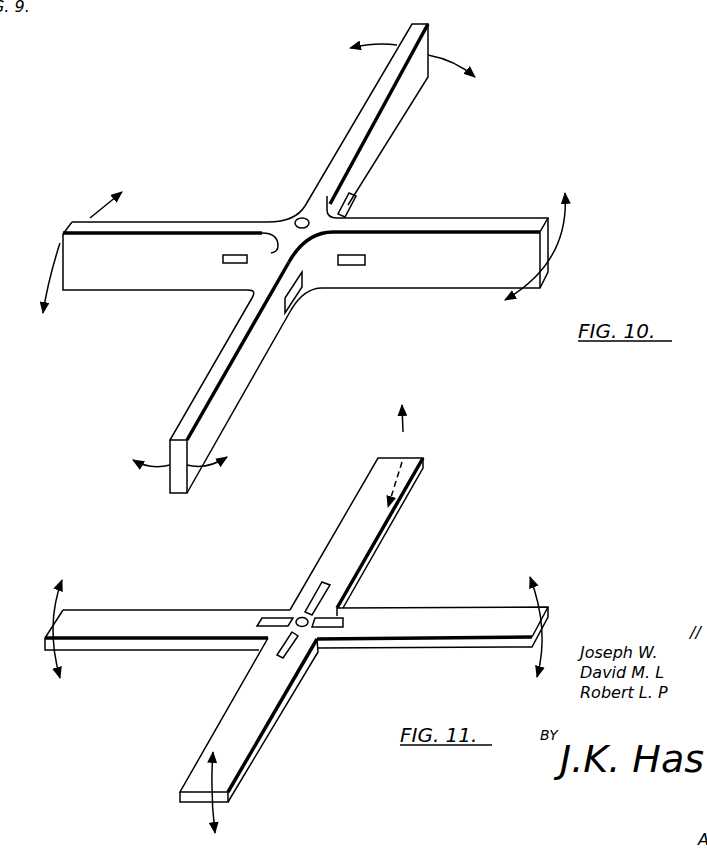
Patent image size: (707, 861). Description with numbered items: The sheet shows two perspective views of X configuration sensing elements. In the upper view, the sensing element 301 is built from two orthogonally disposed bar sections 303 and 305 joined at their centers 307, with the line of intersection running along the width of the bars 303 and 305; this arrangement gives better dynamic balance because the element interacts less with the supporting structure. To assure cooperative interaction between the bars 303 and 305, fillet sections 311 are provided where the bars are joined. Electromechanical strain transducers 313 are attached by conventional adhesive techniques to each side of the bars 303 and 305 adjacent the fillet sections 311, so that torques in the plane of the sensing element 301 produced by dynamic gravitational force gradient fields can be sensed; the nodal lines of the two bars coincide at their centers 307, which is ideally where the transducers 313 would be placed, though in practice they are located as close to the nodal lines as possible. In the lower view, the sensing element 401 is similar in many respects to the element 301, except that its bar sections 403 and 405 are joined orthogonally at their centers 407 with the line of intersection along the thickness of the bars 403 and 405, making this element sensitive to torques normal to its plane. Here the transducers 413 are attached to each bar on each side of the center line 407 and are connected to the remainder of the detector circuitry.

In FIG. 10, the X configuration sensing element 301 is at (305, 258).
In FIG. 10, the bar section 303 is at (481, 222).
In FIG. 10, the bar section 305 is at (351, 132).
In FIG. 10, the center 307 is at (302, 218).
In FIG. 10, the fillet section 311 is at (274, 214).
In FIG. 10, the electromechanical strain transducer 313 is at (286, 298).
In FIG. 11, the sensing element 401 is at (296, 630).
In FIG. 11, the bar section 403 is at (200, 602).
In FIG. 11, the bar section 405 is at (343, 543).
In FIG. 11, the center 407 is at (305, 628).
In FIG. 11, the transducer 413 is at (318, 594).